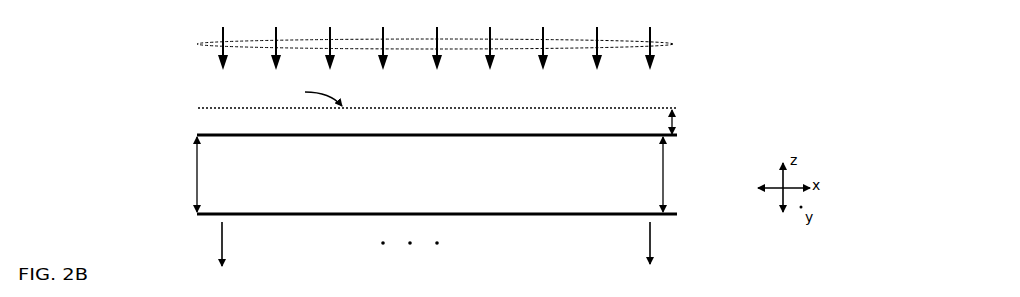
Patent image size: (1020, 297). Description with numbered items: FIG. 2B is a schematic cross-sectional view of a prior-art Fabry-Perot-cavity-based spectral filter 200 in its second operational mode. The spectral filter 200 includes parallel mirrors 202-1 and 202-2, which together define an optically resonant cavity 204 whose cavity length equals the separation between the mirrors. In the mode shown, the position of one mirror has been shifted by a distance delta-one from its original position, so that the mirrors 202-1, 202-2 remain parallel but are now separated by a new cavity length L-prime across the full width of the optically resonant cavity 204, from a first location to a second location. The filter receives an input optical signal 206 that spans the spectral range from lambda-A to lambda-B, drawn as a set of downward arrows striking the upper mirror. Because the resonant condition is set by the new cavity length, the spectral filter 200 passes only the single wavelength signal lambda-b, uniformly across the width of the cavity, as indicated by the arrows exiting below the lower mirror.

The spectral filter 200 is at (120, 130).
The mirror 202-1 is at (410, 213).
The mirror 202-2 is at (327, 137).
The optically resonant cavity 204 is at (538, 183).
The input optical signal 206 is at (673, 43).